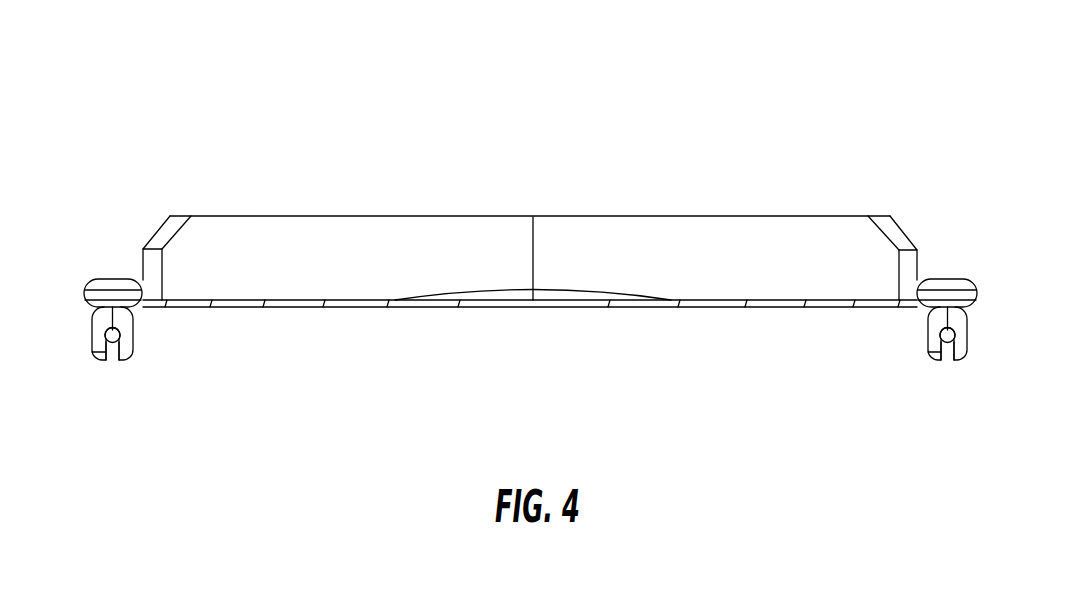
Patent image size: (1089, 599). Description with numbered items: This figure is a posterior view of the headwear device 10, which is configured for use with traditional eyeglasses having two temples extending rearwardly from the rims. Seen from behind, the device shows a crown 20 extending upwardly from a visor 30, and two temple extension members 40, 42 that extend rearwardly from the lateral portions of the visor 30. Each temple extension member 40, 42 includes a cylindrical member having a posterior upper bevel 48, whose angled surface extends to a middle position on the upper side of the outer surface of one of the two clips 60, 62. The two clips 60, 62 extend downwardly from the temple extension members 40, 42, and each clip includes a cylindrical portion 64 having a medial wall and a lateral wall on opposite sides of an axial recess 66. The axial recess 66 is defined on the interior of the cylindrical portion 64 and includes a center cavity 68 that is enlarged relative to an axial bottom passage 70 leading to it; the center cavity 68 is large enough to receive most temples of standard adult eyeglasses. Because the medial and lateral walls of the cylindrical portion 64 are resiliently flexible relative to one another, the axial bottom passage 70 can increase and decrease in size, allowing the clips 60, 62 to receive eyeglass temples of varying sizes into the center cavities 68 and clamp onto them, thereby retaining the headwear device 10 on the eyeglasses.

The headwear device 10 is at (837, 93).
The crown 20 is at (436, 228).
The visor 30 is at (641, 309).
The temple extension member 40 is at (84, 300).
The temple extension member 42 is at (977, 298).
The posterior upper bevel 48 is at (100, 290).
The clip 60 is at (92, 336).
The clip 62 is at (968, 325).
The cylindrical portion 64 is at (120, 312).
The axial recess 66 is at (97, 353).
The center cavity 68 is at (130, 336).
The axial bottom passage 70 is at (113, 376).